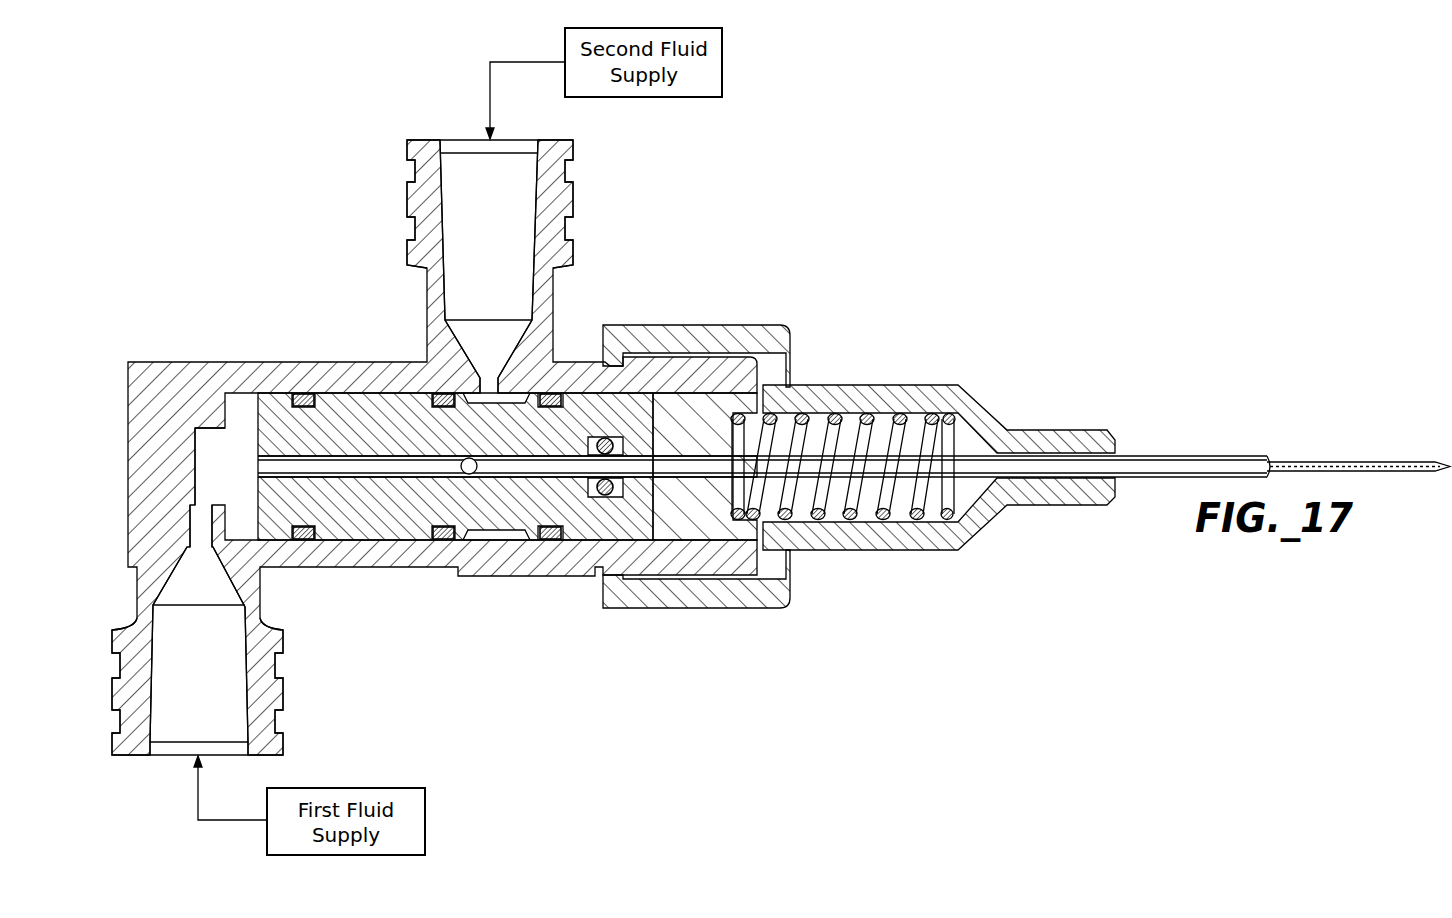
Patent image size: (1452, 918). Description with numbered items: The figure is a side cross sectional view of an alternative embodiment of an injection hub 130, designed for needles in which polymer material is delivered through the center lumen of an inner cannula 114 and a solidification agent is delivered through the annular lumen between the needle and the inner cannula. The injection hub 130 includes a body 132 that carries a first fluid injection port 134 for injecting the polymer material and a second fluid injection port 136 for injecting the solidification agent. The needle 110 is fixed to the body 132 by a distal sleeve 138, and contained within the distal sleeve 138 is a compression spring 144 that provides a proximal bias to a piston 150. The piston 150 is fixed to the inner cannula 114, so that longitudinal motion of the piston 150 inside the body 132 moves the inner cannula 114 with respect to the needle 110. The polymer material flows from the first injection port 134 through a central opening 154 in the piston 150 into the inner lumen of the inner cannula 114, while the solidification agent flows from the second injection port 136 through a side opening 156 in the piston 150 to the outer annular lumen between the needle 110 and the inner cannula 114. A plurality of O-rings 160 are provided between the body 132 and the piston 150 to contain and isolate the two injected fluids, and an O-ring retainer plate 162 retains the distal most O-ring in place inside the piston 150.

The needle 110 is at (1187, 457).
The inner cannula 114 is at (352, 477).
The injection hub 130 is at (717, 231).
The body 132 is at (153, 372).
The first fluid injection port 134 is at (216, 730).
The second fluid injection port 136 is at (512, 168).
The distal sleeve 138 is at (950, 386).
The compression spring 144 is at (862, 415).
The piston 150 is at (386, 420).
The central opening 154 is at (248, 470).
The side opening 156 is at (476, 460).
The O-rings 160 is at (305, 392).
The O-ring retainer plate 162 is at (680, 415).